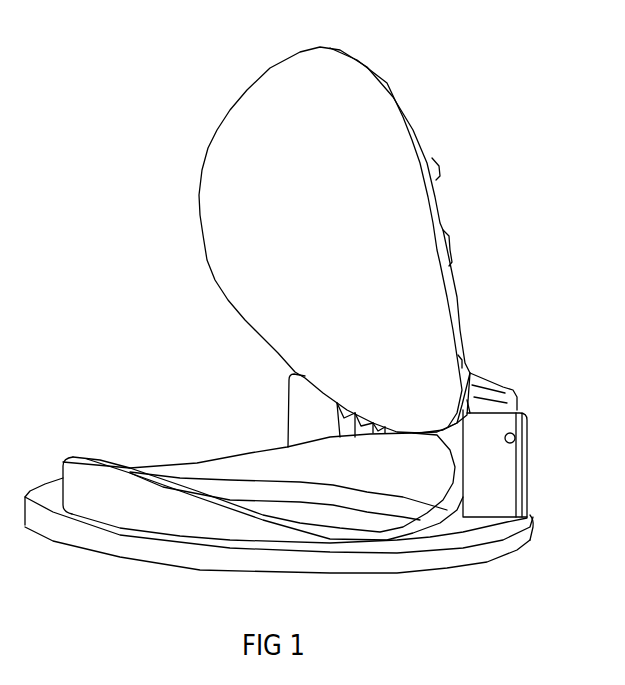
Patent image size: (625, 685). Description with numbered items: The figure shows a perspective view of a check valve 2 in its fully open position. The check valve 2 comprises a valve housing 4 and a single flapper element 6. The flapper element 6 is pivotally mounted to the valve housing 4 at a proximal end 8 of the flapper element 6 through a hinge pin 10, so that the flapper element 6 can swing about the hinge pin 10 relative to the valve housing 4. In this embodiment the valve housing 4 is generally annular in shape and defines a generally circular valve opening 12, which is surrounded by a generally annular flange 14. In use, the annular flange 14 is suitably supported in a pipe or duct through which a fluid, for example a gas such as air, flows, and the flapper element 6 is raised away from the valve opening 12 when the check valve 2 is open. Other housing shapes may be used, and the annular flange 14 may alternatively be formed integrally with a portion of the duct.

The check valve 2 is at (311, 366).
The valve housing 4 is at (460, 553).
The flapper element 6 is at (420, 142).
The proximal end 8 is at (490, 367).
The hinge pin 10 is at (517, 440).
The valve opening 12 is at (372, 517).
The annular flange 14 is at (120, 530).